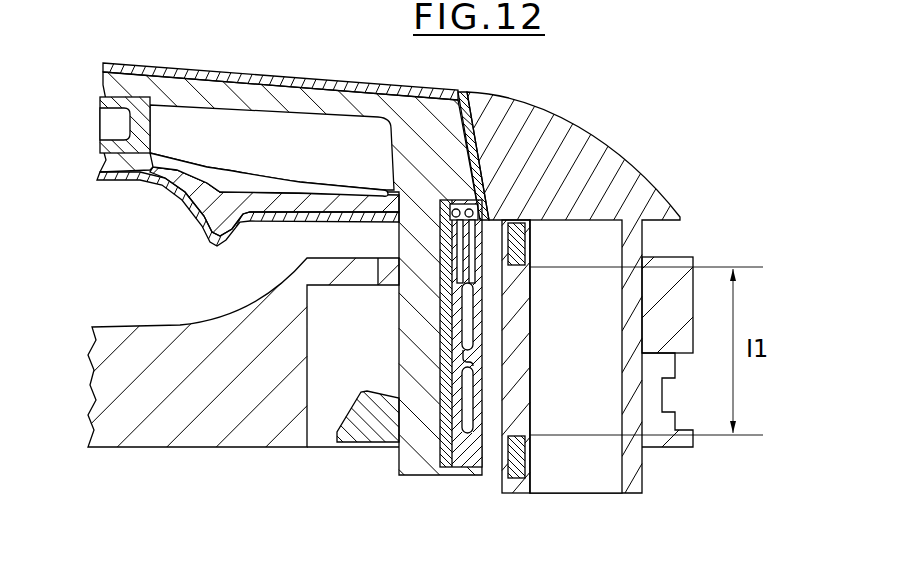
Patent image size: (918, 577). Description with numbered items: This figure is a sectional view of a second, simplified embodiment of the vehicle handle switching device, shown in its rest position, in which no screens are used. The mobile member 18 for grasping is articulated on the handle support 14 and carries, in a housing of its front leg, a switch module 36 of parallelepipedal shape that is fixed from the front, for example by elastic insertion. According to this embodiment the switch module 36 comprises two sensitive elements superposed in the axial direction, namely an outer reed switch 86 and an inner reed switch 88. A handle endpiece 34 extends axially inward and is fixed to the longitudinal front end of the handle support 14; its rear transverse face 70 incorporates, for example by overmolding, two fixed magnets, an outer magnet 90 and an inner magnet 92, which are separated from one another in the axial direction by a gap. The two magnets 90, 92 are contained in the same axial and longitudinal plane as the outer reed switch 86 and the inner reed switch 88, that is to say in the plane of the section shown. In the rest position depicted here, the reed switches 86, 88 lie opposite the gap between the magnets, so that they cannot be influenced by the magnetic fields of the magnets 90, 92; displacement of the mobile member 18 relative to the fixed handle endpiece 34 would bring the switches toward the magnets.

The handle support 14 is at (249, 458).
The mobile member for grasping 18 is at (329, 62).
The handle endpiece 34 is at (582, 122).
The switch module 36 is at (494, 371).
The rear transverse face 70 is at (504, 484).
The outer reed switch 86 is at (468, 320).
The inner reed switch 88 is at (468, 402).
The outer magnet 90 is at (520, 244).
The inner magnet 92 is at (532, 458).